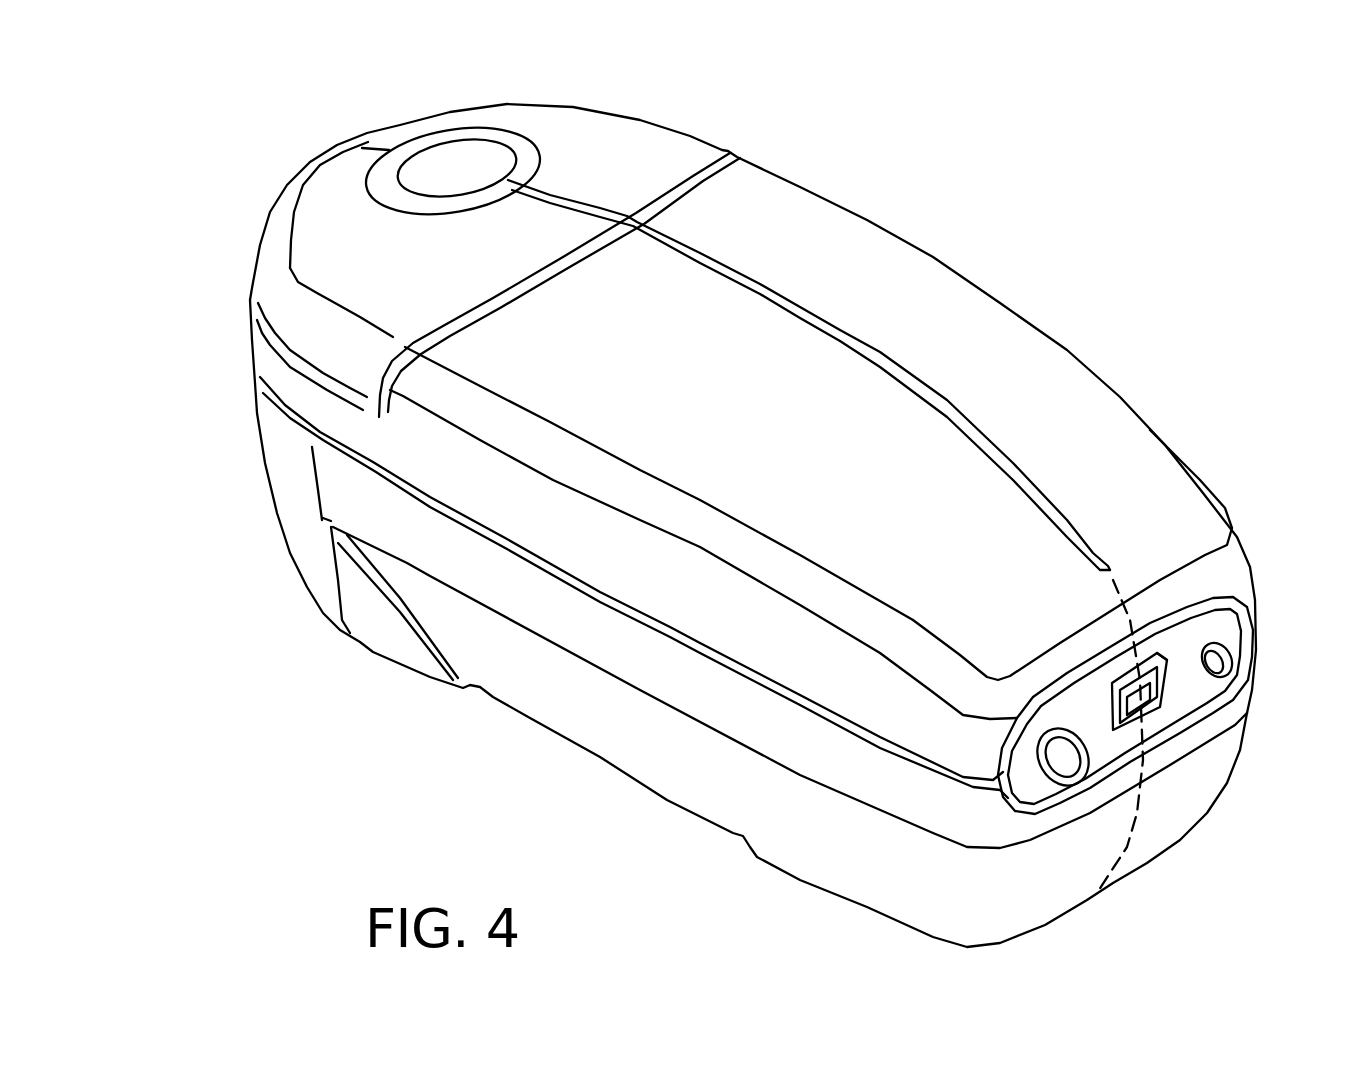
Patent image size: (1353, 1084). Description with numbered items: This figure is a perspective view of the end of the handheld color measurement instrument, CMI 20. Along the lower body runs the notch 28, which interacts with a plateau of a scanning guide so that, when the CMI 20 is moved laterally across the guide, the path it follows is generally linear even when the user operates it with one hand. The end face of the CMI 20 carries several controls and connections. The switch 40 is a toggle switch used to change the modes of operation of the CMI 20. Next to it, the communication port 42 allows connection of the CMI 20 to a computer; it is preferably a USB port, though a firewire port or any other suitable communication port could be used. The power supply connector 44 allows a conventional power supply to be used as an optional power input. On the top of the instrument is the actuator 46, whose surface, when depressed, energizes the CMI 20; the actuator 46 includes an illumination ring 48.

The CMI 20 is at (231, 569).
The notch 28 is at (660, 812).
The switch 40 is at (1072, 757).
The communication port 42 is at (1130, 697).
The power supply connector 44 is at (1235, 658).
The actuator 46 is at (457, 162).
The illumination ring 48 is at (490, 128).